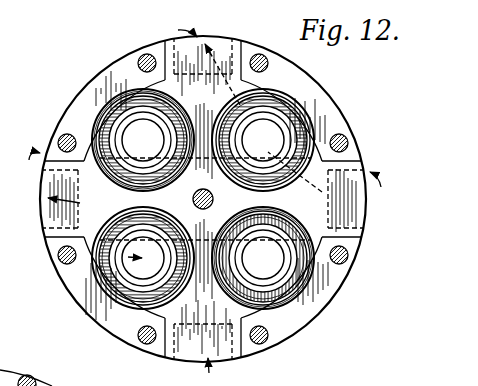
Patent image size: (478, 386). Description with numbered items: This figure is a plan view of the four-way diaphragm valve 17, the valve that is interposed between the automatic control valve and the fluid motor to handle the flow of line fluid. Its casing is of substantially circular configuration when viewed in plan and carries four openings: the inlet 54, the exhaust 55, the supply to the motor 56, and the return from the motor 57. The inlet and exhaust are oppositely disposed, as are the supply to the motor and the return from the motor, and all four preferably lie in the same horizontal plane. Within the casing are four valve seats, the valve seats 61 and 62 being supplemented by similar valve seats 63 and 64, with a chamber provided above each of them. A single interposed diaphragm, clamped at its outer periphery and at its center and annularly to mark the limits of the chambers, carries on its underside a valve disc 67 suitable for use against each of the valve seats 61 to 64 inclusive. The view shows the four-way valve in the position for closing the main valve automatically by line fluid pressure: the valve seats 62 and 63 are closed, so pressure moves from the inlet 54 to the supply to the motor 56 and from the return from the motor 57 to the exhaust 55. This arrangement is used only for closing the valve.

The four-way diaphragm valve 17 is at (310, 335).
The inlet 54 is at (356, 172).
The exhaust 55 is at (92, 210).
The supply to the motor 56 is at (240, 38).
The return from the motor 57 is at (262, 352).
The valve seat 61 is at (258, 148).
The valve seat 62 is at (140, 138).
The valve seat 63 is at (305, 272).
The valve seat 64 is at (125, 281).
The valve disc 67 is at (128, 108).